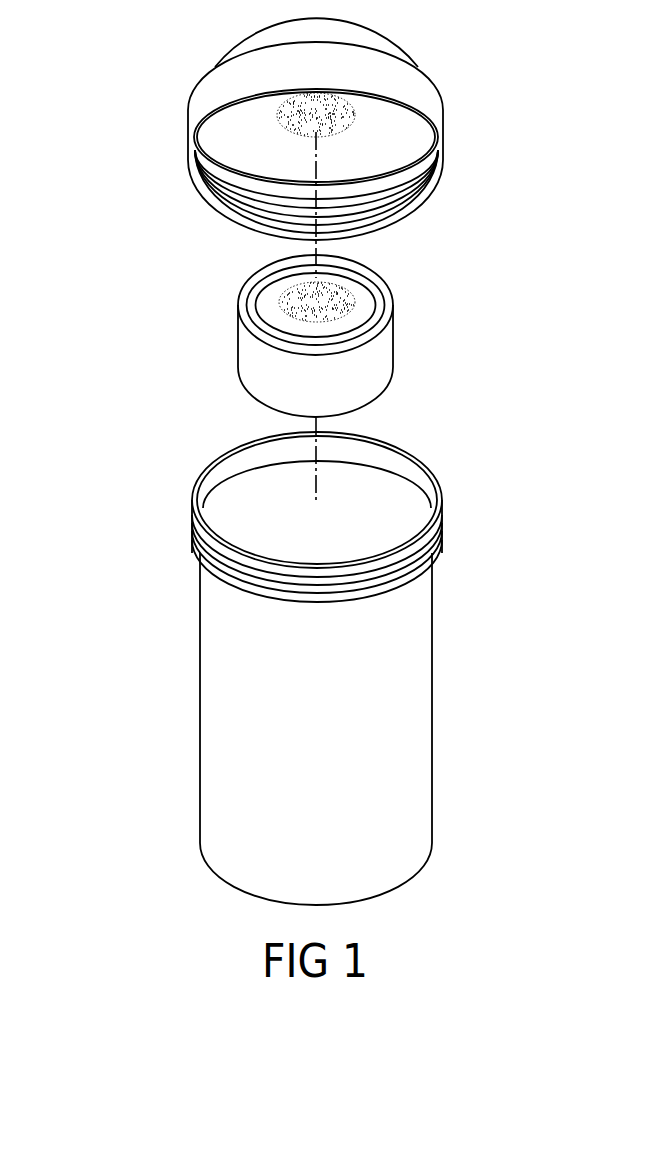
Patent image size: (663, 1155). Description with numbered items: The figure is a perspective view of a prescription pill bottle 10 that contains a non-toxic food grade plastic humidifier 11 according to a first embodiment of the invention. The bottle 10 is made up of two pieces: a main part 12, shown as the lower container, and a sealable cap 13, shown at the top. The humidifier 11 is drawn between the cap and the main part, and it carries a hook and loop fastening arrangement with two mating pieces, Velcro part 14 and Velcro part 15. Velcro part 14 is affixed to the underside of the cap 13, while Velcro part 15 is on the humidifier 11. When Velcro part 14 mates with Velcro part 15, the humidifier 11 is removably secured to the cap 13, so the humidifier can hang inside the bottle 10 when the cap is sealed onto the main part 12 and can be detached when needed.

The prescription pill bottle 10 is at (132, 465).
The humidifier 11 is at (256, 362).
The main part 12 is at (435, 720).
The sealable cap 13 is at (446, 117).
The Velcro part 14 is at (305, 122).
The Velcro part 15 is at (320, 298).